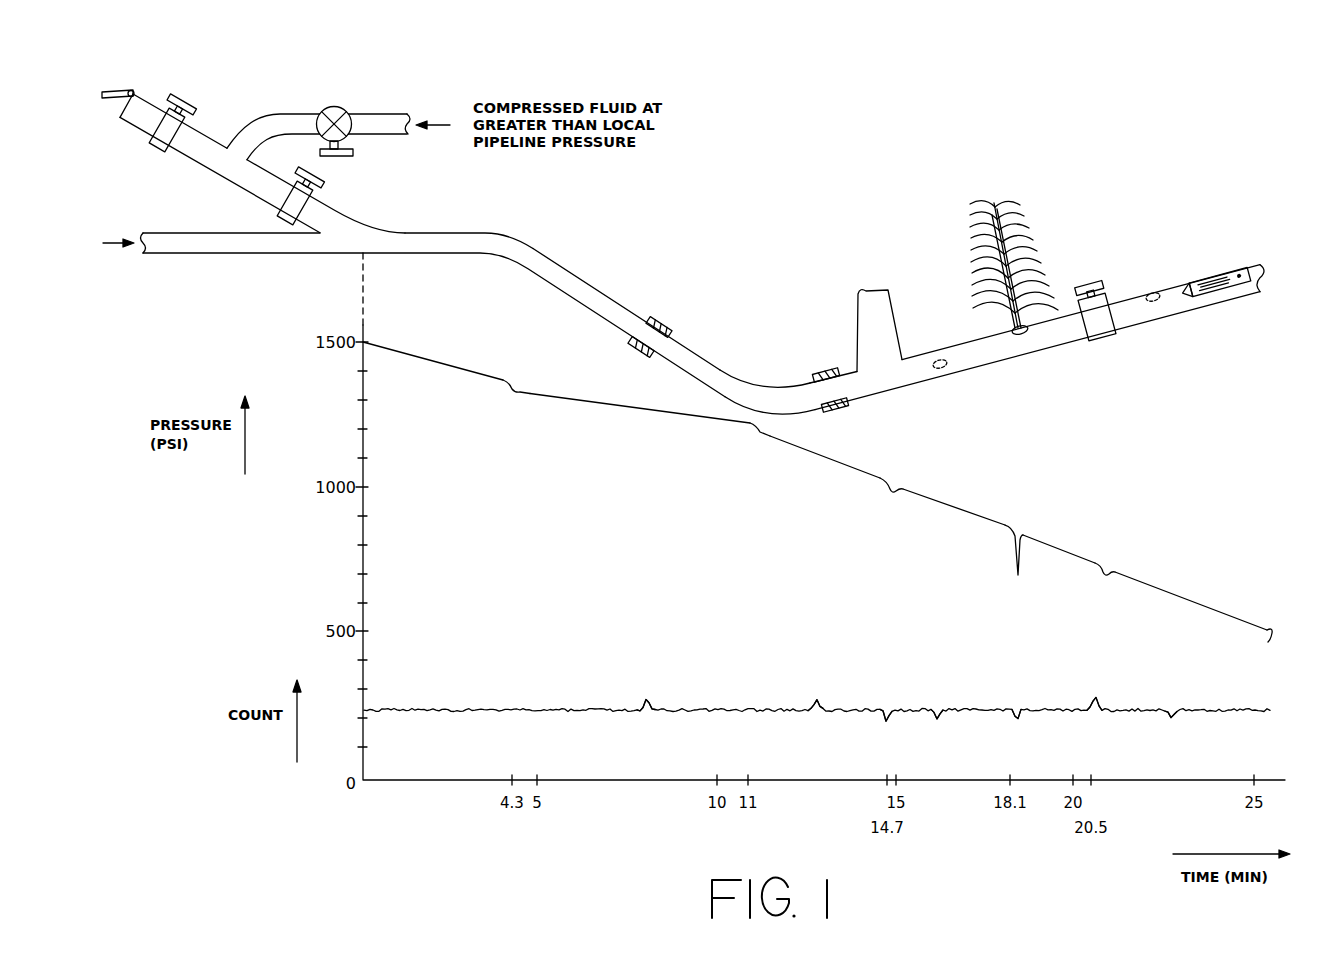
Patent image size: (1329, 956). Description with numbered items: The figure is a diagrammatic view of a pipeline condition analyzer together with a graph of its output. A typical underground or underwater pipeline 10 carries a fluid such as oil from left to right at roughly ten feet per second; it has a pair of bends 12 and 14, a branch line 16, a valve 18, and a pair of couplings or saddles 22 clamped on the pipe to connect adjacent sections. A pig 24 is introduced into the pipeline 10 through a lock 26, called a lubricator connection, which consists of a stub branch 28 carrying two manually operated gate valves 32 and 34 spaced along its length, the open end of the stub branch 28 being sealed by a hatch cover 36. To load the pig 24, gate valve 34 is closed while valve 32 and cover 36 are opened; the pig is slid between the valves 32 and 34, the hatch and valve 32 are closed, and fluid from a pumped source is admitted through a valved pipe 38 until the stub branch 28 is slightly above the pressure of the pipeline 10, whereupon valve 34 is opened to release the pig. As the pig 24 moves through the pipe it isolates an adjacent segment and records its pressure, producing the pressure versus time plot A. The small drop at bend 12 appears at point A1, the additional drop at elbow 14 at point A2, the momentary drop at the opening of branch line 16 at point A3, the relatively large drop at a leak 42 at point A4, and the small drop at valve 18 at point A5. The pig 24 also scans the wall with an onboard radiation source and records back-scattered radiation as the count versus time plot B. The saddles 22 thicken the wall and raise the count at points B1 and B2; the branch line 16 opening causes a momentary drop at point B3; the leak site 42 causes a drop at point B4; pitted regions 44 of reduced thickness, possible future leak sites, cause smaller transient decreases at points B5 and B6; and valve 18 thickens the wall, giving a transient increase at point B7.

The pipeline 10 is at (532, 268).
The bend 12 is at (488, 232).
The bend 14 is at (773, 414).
The branch line 16 is at (884, 300).
The valve 18 is at (1108, 326).
The couplings or saddles 22 is at (663, 316).
The pig 24 is at (1228, 272).
The lock 26 is at (211, 168).
The stub branch 28 is at (359, 222).
The gate valve 32 is at (156, 150).
The gate valve 34 is at (274, 208).
The hatch cover 36 is at (124, 91).
The valved pipe 38 is at (390, 112).
The leak 42 is at (1026, 338).
The pitted regions 44 is at (944, 370).
The pressure versus time plot A is at (438, 360).
The point on curve A A1 is at (522, 390).
The point on curve A A2 is at (752, 426).
The point on curve A A3 is at (890, 492).
The point on curve A A4 is at (1016, 546).
The point on curve A A5 is at (1105, 578).
The radiation count versus time plot B is at (425, 708).
The point on curve B B1 is at (645, 704).
The point on curve B B2 is at (818, 700).
The point on curve B B3 is at (884, 722).
The point on curve B B4 is at (1017, 721).
The point on curve B B5 is at (936, 721).
The point on curve B B6 is at (1171, 721).
The point on curve B B7 is at (1098, 700).